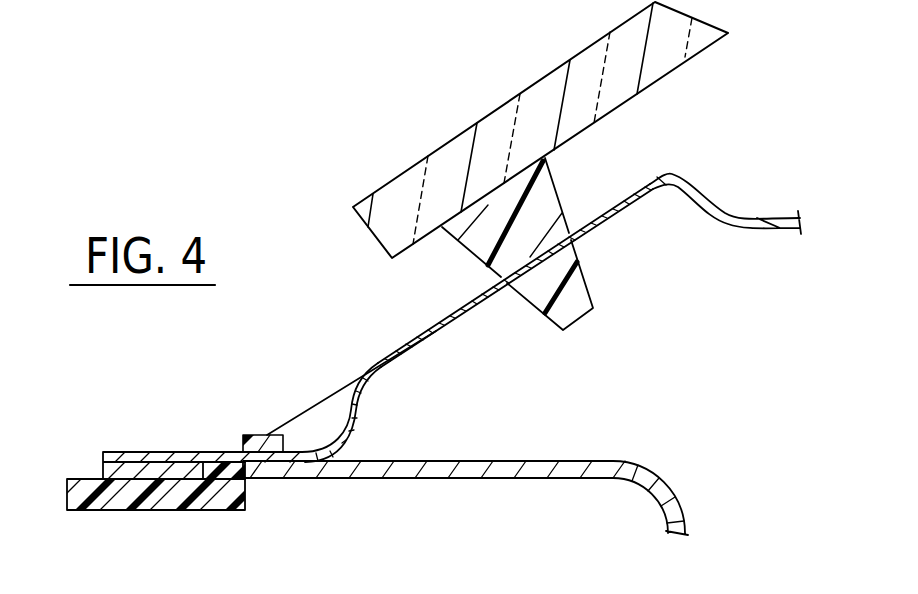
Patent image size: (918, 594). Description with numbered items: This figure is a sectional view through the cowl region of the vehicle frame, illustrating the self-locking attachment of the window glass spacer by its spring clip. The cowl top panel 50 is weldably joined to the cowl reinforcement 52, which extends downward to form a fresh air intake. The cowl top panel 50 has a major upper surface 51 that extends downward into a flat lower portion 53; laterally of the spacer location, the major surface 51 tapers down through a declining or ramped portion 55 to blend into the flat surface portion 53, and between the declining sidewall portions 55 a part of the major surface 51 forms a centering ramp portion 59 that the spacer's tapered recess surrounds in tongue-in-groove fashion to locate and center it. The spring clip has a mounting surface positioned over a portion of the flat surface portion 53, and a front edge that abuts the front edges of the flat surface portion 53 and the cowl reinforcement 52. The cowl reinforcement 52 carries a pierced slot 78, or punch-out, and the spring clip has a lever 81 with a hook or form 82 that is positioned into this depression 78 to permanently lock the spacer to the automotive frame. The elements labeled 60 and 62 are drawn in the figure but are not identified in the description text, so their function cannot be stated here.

The cowl top panel 50 is at (390, 367).
The major upper surface 51 is at (420, 331).
The cowl reinforcement 52 is at (507, 460).
The flat lower portion 53 is at (123, 452).
The declining or ramped portion 55 is at (322, 425).
The centering ramp portion 59 is at (313, 397).
The contact bar 60 is at (412, 167).
The contact block 62 is at (559, 203).
The pierced slot 78 is at (233, 470).
The lever 81 is at (92, 513).
The hook or form 82 is at (212, 462).